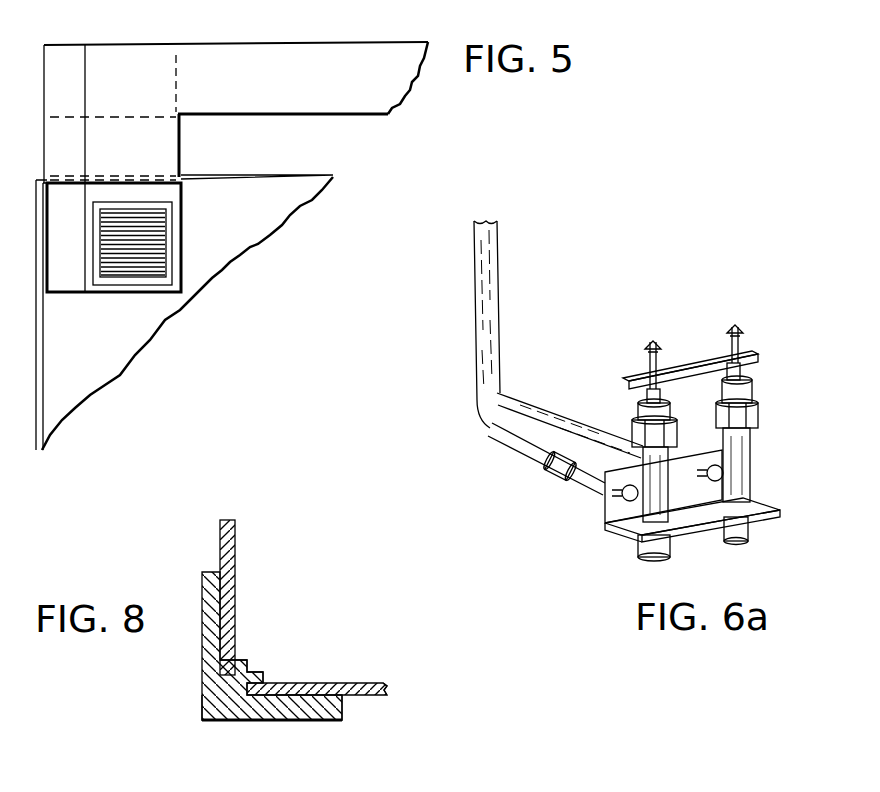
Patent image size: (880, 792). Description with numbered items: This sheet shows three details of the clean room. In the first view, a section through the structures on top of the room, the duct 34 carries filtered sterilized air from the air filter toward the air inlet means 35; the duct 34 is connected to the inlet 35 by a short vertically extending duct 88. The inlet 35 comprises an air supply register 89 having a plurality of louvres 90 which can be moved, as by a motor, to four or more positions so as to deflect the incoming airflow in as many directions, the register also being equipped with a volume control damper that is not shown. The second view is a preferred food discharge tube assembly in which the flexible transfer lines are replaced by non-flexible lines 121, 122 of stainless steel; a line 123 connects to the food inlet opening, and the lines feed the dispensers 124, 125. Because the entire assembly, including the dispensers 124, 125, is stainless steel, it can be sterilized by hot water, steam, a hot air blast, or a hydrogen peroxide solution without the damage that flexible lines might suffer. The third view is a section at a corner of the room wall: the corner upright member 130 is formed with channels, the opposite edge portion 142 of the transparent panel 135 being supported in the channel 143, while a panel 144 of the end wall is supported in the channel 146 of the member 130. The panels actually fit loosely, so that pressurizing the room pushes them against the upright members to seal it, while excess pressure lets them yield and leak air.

In FIG. 5, the duct 34 is at (340, 117).
In FIG. 5, the short vertically extending duct 88 is at (183, 147).
In FIG. 5, the air inlet means 35 is at (100, 297).
In FIG. 5, the air supply register 89 is at (157, 278).
In FIG. 5, the louvres 90 is at (145, 255).
In FIG. 6a, the line 123 is at (483, 290).
In FIG. 6a, the non-flexible line 122 is at (555, 410).
In FIG. 6a, the non-flexible line 121 is at (527, 450).
In FIG. 6a, the dispenser 124 is at (623, 520).
In FIG. 6a, the dispenser 125 is at (752, 462).
In FIG. 8, the panel 144 is at (237, 572).
In FIG. 8, the channel 143 is at (238, 693).
In FIG. 8, the corner upright member 130 is at (315, 720).
In FIG. 8, the opposite edge portion 142 is at (278, 683).
In FIG. 8, the panel 135 is at (381, 683).
In FIG. 8, the channel 146 is at (222, 686).